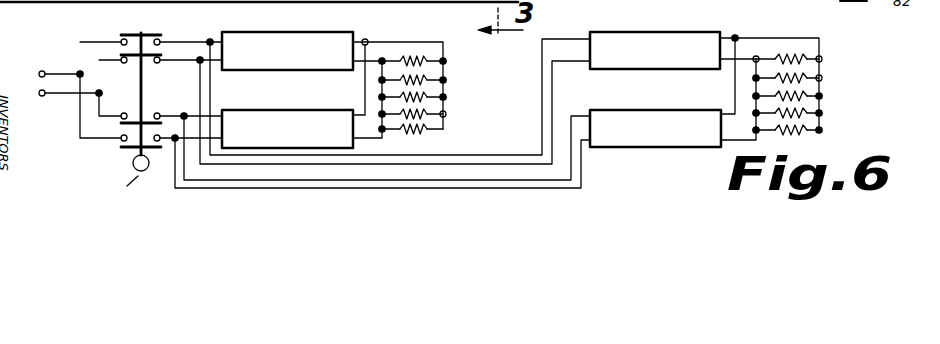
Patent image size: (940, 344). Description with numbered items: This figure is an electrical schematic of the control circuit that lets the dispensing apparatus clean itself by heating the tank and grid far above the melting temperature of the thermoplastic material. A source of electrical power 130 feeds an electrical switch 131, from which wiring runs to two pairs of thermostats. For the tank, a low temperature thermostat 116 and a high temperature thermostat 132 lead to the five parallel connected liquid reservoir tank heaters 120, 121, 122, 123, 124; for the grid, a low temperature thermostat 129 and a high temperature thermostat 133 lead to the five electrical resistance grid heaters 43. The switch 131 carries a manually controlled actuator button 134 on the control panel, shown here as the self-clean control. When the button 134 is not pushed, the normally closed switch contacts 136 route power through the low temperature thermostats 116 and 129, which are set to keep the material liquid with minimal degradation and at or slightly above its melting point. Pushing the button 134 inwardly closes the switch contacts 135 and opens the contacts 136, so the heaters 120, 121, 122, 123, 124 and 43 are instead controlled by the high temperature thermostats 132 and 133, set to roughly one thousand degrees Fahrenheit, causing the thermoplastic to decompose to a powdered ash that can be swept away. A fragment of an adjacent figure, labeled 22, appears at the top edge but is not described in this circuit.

The oven housing 22 is at (28, 3).
The source of electrical power 130 is at (37, 80).
The electrical switch 131 is at (150, 82).
The normally closed switch contacts 136 is at (162, 45).
The switch contacts 135 is at (119, 137).
The manually controlled actuator button 134 is at (134, 165).
The low temperature thermostat 116 is at (233, 70).
The high temperature thermostat 132 is at (300, 110).
The liquid reservoir tank heater 120 is at (423, 56).
The liquid reservoir tank heater 121 is at (425, 75).
The liquid reservoir tank heater 122 is at (427, 93).
The liquid reservoir tank heater 123 is at (446, 114).
The liquid reservoir tank heater 124 is at (433, 138).
The low temperature thermostat 129 is at (587, 78).
The high temperature thermostat 133 is at (711, 94).
The grid heaters 43 is at (807, 128).